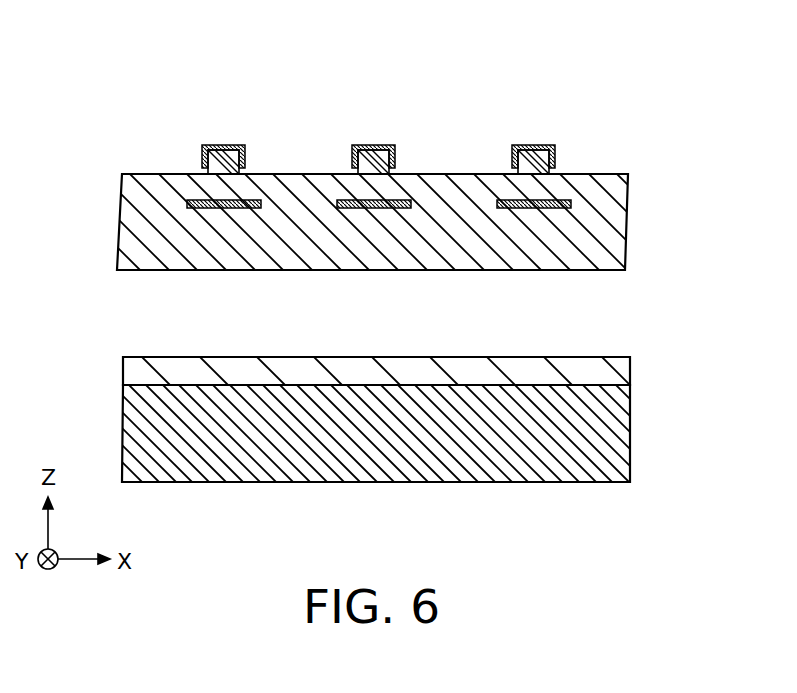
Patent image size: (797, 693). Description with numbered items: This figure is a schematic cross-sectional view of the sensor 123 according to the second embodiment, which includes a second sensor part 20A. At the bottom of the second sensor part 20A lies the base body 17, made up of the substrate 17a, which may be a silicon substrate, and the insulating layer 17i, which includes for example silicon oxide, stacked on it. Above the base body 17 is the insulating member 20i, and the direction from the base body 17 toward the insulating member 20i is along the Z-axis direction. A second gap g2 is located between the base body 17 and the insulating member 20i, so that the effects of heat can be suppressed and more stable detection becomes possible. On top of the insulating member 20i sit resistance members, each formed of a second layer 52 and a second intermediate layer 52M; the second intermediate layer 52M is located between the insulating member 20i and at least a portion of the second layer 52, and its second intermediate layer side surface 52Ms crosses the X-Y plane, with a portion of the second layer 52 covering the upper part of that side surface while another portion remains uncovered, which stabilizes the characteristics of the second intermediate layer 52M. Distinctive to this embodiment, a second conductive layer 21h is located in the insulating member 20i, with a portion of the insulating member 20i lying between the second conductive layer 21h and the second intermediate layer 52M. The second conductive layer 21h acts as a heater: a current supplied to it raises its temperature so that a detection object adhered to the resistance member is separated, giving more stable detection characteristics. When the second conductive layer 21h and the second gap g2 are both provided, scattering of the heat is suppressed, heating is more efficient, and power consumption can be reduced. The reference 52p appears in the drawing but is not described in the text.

The insulating member 20i is at (602, 236).
The second conductive layer 21h is at (210, 202).
The second intermediate layer 52M is at (223, 160).
The second layer 52 is at (240, 158).
The pad 52p is at (395, 157).
The second intermediate layer side surface 52Ms is at (395, 169).
The second sensor part 20A is at (624, 133).
The sensor 123 is at (690, 111).
The base body 17 is at (387, 449).
The insulating layer 17i is at (508, 372).
The substrate 17a is at (403, 437).
The second gap g2 is at (321, 324).